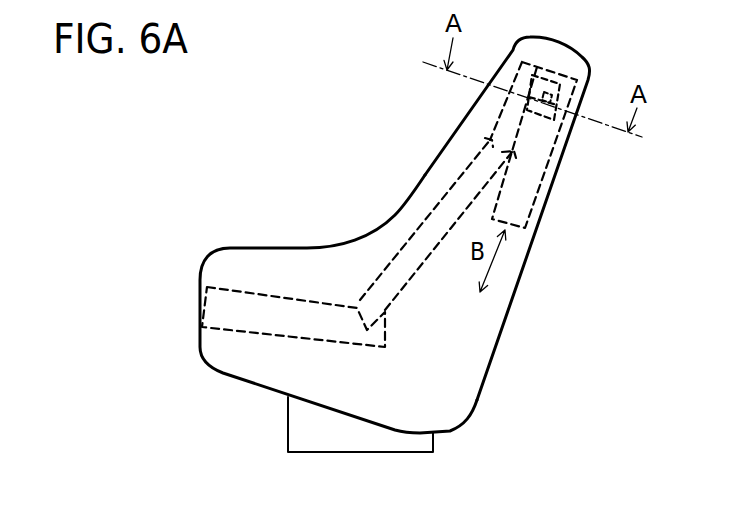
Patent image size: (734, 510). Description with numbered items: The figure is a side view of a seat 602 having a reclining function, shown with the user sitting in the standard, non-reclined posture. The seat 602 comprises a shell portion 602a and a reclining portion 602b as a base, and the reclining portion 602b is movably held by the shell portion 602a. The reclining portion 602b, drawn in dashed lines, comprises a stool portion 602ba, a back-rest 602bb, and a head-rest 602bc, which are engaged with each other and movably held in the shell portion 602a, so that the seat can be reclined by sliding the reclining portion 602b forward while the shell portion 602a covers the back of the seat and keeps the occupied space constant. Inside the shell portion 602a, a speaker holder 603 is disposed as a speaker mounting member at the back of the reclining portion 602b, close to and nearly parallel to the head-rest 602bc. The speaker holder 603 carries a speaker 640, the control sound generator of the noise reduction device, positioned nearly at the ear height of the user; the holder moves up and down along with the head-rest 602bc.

The seat 602 is at (220, 247).
The shell portion 602a is at (220, 355).
The reclining portion 602b is at (252, 214).
The stool portion 602ba is at (307, 308).
The back-rest 602bb is at (462, 181).
The head-rest 602bc is at (506, 126).
The speaker holder 603 is at (543, 130).
The speaker 640 is at (552, 93).